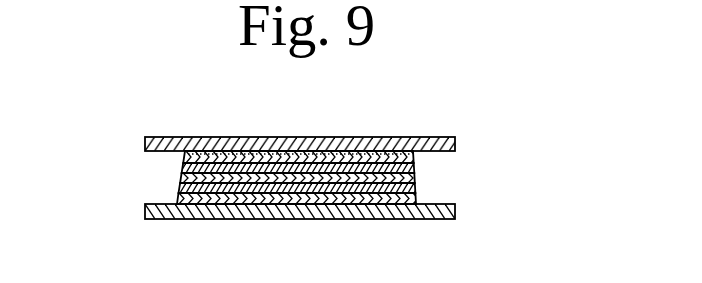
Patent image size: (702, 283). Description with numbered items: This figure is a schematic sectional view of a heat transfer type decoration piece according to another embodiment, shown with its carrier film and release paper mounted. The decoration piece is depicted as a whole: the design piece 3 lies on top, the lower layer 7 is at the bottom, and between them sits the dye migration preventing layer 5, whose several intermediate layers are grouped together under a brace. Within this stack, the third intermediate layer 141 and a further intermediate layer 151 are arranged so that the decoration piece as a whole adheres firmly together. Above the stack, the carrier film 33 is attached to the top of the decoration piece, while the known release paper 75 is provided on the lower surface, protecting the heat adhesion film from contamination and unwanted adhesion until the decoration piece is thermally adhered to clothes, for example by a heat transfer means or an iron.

The carrier film 33 is at (157, 147).
The release paper 75 is at (150, 212).
The design piece 3 is at (413, 157).
The dye migration preventing layer 5 is at (175, 163).
The third intermediate layer 141 is at (413, 173).
The lower adhesive layer 151 is at (413, 186).
The lower layer 7 is at (413, 203).